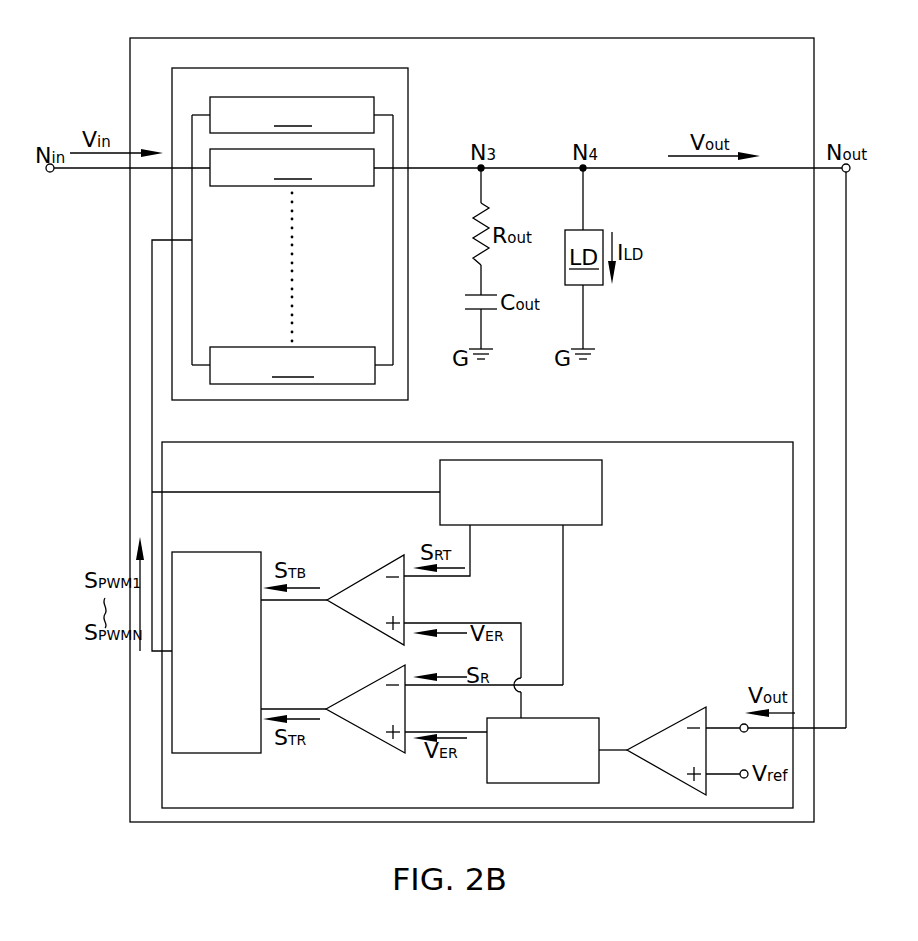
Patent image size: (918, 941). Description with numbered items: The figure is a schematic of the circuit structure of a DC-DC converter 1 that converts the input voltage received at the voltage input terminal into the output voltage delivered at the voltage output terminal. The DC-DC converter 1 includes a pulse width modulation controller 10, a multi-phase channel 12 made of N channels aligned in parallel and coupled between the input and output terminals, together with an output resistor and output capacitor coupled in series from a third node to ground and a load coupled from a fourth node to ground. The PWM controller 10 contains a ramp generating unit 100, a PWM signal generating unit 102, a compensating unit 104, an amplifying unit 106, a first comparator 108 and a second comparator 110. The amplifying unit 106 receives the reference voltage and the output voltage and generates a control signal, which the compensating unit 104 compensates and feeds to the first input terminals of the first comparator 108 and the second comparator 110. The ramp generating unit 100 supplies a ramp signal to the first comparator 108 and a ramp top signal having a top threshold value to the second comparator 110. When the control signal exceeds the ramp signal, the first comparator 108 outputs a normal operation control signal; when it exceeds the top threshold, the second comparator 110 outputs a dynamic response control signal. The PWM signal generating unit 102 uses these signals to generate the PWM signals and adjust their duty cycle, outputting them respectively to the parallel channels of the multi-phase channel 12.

The DC-DC converter 1 is at (155, 69).
The multi-phase channel 12 is at (201, 91).
The pulse width modulation (PWM) controller 10 is at (199, 470).
The ramp generating unit 100 is at (542, 505).
The PWM signal generating unit 102 is at (236, 676).
The compensating unit 104 is at (563, 763).
The amplifying unit 106 is at (690, 761).
The first comparator 108 is at (388, 720).
The second comparator 110 is at (388, 613).